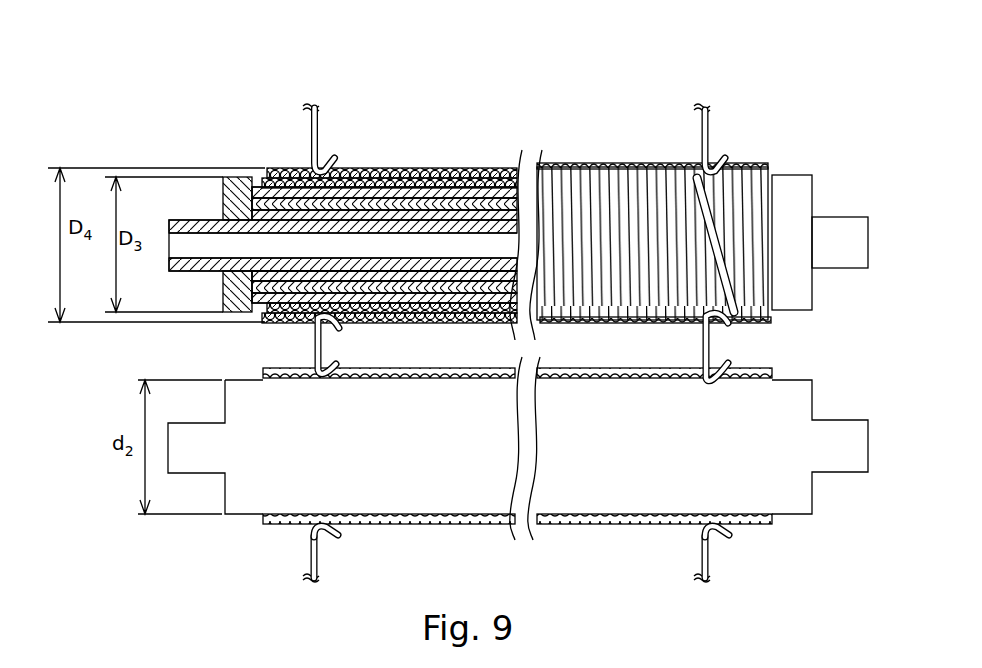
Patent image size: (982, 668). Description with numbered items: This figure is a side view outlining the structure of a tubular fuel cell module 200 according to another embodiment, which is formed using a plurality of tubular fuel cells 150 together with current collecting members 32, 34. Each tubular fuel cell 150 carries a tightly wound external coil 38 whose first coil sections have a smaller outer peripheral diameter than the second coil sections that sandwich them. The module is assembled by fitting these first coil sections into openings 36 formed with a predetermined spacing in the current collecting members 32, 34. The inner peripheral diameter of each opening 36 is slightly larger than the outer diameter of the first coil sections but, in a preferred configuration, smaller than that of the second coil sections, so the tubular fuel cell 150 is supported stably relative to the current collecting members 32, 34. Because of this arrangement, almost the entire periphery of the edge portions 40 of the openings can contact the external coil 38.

The tubular fuel cell module 200 is at (509, 100).
The current collecting member 32 is at (312, 130).
The current collecting member 34 is at (710, 138).
The opening 36 is at (323, 453).
The external coil 38 is at (568, 166).
The tubular fuel cell 150 is at (610, 160).
The edge portion 40 is at (340, 533).